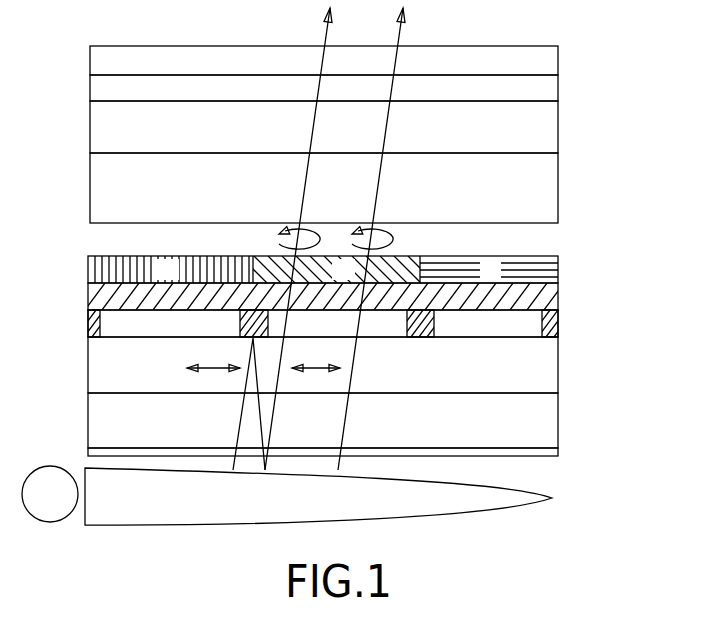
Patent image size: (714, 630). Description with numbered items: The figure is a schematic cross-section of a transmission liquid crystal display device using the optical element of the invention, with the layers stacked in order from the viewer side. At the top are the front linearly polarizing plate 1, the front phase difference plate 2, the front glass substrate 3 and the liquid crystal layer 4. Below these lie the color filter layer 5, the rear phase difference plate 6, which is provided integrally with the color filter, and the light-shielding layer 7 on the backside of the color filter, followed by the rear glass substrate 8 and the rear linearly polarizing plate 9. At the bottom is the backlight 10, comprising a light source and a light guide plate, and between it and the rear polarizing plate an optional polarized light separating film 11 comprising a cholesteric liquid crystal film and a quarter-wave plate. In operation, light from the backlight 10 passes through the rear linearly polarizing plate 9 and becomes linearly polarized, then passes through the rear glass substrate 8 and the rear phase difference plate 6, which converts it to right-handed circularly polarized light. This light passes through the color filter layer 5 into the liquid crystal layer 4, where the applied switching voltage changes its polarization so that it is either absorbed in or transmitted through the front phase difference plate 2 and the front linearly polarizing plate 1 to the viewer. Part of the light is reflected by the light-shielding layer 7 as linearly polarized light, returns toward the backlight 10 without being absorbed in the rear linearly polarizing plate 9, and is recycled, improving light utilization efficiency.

The front linearly polarizing plate 1 is at (558, 63).
The front phase difference plate 2 is at (558, 93).
The front glass substrate 3 is at (558, 130).
The liquid crystal layer 4 is at (558, 188).
The color filter layer 5 is at (558, 271).
The rear phase difference plate 6 is at (558, 300).
The light-shielding layer (reflecting layer) 7 is at (558, 324).
The rear glass substrate 8 is at (558, 362).
The rear linearly polarizing plate 9 is at (558, 413).
The backlight 10 is at (552, 498).
The polarized light separating film 11 is at (558, 450).